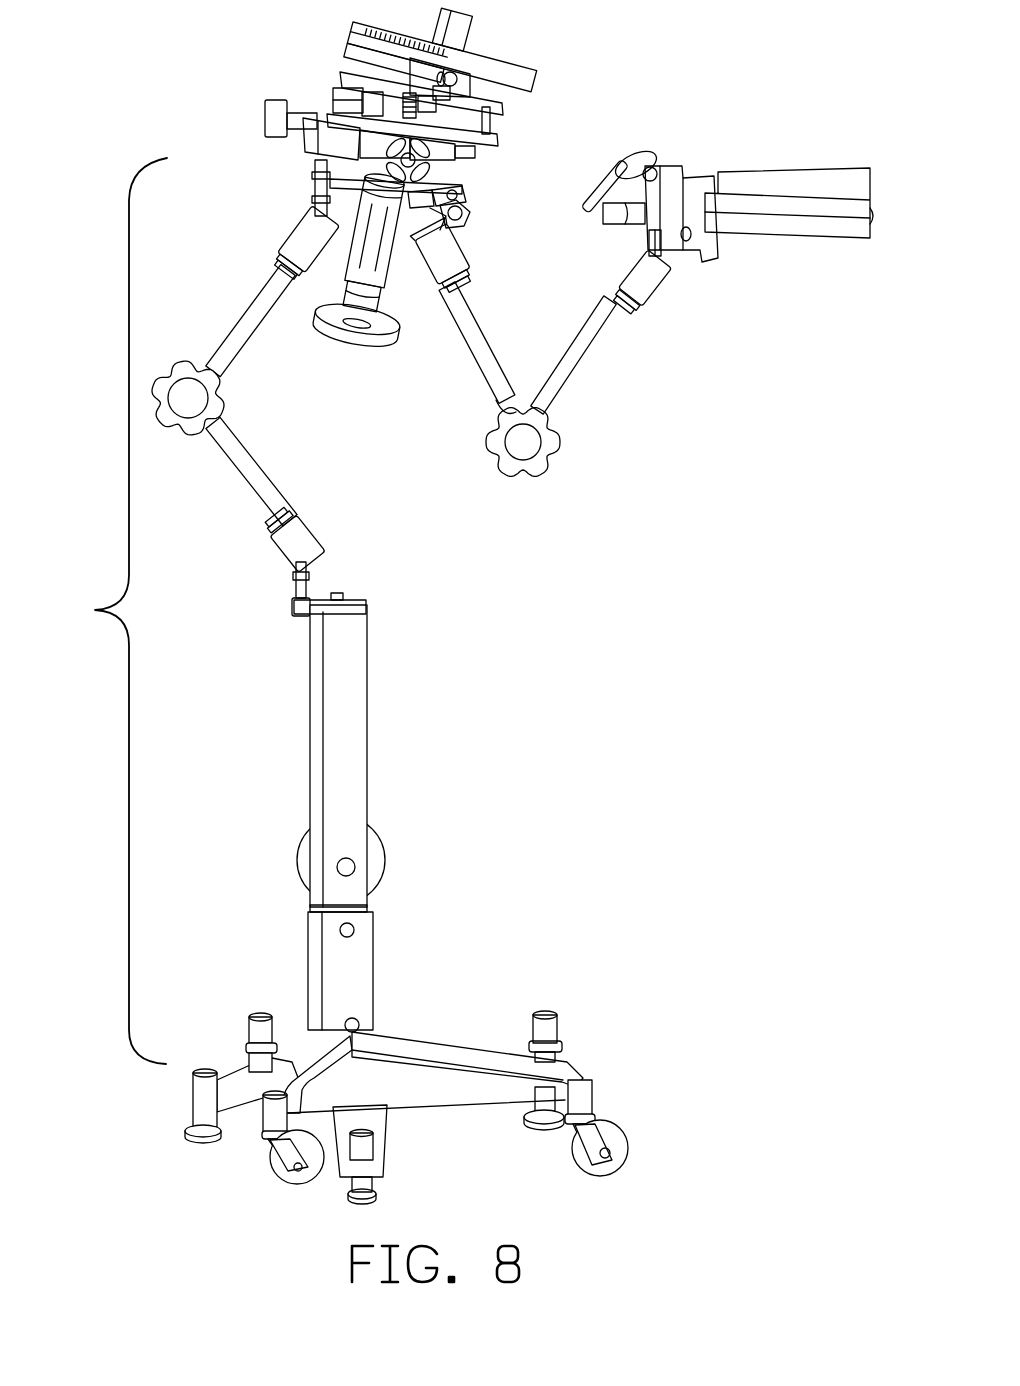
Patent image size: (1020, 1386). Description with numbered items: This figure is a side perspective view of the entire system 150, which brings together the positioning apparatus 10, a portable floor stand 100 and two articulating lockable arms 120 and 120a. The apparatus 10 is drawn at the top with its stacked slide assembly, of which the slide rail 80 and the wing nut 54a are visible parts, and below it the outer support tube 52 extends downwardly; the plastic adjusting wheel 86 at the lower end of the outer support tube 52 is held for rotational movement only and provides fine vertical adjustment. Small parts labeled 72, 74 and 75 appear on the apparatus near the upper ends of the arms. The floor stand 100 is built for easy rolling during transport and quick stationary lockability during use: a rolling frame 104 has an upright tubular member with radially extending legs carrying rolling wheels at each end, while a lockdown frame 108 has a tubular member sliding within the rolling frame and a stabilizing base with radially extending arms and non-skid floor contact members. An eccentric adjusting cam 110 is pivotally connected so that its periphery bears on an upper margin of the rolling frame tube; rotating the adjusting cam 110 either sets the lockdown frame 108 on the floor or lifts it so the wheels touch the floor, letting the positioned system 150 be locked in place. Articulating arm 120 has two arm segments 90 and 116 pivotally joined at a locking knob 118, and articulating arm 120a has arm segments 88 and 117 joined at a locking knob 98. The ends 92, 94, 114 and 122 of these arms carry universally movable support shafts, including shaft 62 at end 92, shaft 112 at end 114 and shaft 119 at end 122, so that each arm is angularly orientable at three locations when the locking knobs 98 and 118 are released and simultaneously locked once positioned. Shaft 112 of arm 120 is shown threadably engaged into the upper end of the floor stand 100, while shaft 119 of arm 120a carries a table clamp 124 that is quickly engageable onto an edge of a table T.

The apparatus 10 is at (523, 126).
The slide rail 80 is at (506, 51).
The wing nut 54a is at (322, 182).
The universally movable support shaft 62 is at (320, 212).
The outer support tube 52 is at (346, 262).
The adjusting wheel 86 is at (335, 342).
The bracket 72 is at (422, 210).
The clamp block 74 is at (462, 198).
The clamp knob 75 is at (462, 222).
The end of articulating arm member 92 is at (286, 222).
The arm segment 90 is at (244, 340).
The end of articulating arm member 94 is at (468, 250).
The arm segment 88 is at (480, 305).
The locking knob 98 is at (514, 472).
The locking knob 118 is at (190, 434).
The arm segment 116 is at (268, 472).
The end of articulating arm member 114 is at (318, 530).
The universally movable support shaft 112 is at (312, 584).
The arm segment 117 is at (574, 352).
The universally movable support shaft 119 is at (643, 244).
The articulating lockable arm 120 is at (240, 302).
The articulating lockable arm 120a is at (565, 386).
The end of articulating arm member 122 is at (666, 298).
The table clamp 124 is at (698, 262).
The table T is at (836, 240).
The portable floor stand 100 is at (370, 784).
The rolling frame 104 is at (442, 1027).
The lockdown frame 108 is at (475, 1110).
The eccentric adjusting cam 110 is at (388, 864).
The system 150 is at (102, 611).